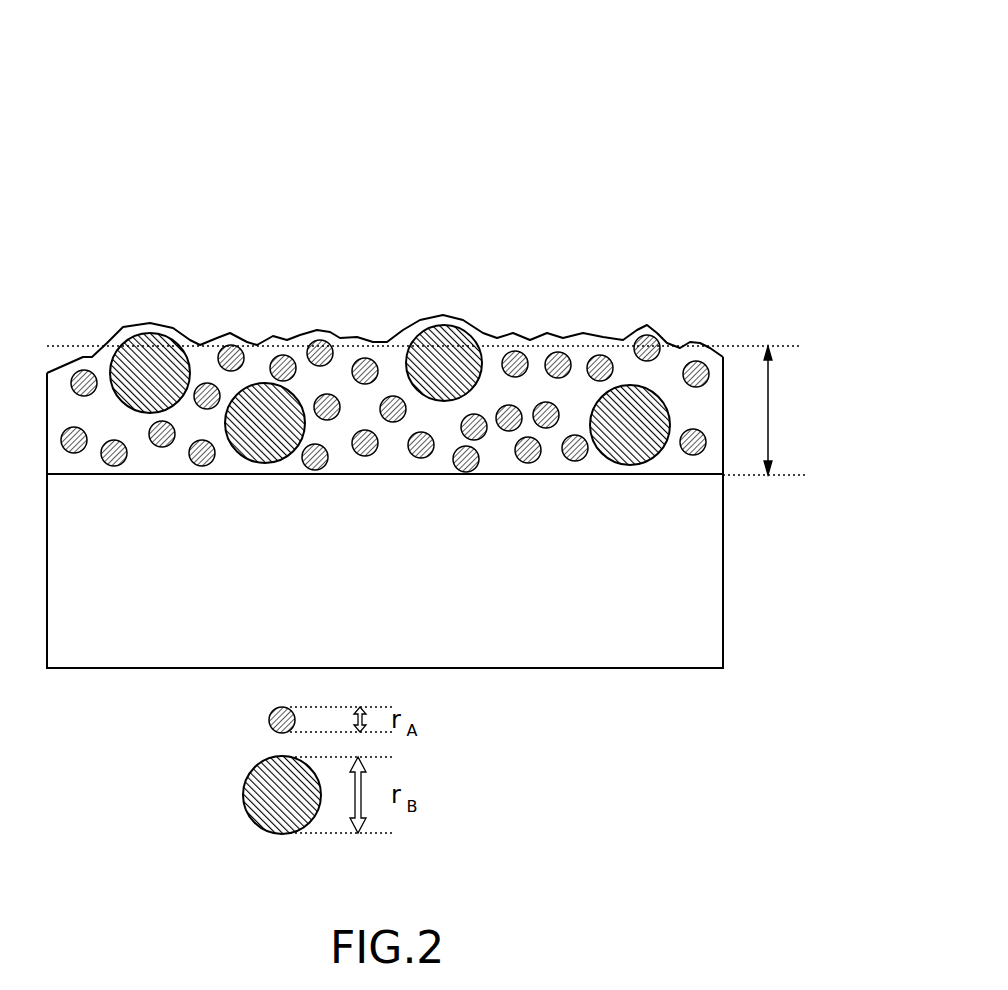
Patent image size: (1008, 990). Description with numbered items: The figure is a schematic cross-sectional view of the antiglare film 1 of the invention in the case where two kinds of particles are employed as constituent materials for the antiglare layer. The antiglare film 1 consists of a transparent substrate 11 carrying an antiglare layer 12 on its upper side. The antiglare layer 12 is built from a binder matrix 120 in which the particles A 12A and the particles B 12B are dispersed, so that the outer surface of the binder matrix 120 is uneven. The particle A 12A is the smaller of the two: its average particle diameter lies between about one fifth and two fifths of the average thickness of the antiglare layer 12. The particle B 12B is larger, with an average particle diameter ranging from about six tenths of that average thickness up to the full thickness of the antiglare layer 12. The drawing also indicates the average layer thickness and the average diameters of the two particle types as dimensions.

The antiglare film 1 is at (498, 120).
The transparent substrate 11 is at (672, 553).
The antiglare layer 12 is at (483, 319).
The particle A 12A is at (650, 337).
The particle B 12B is at (455, 353).
The binder matrix 120 is at (258, 350).